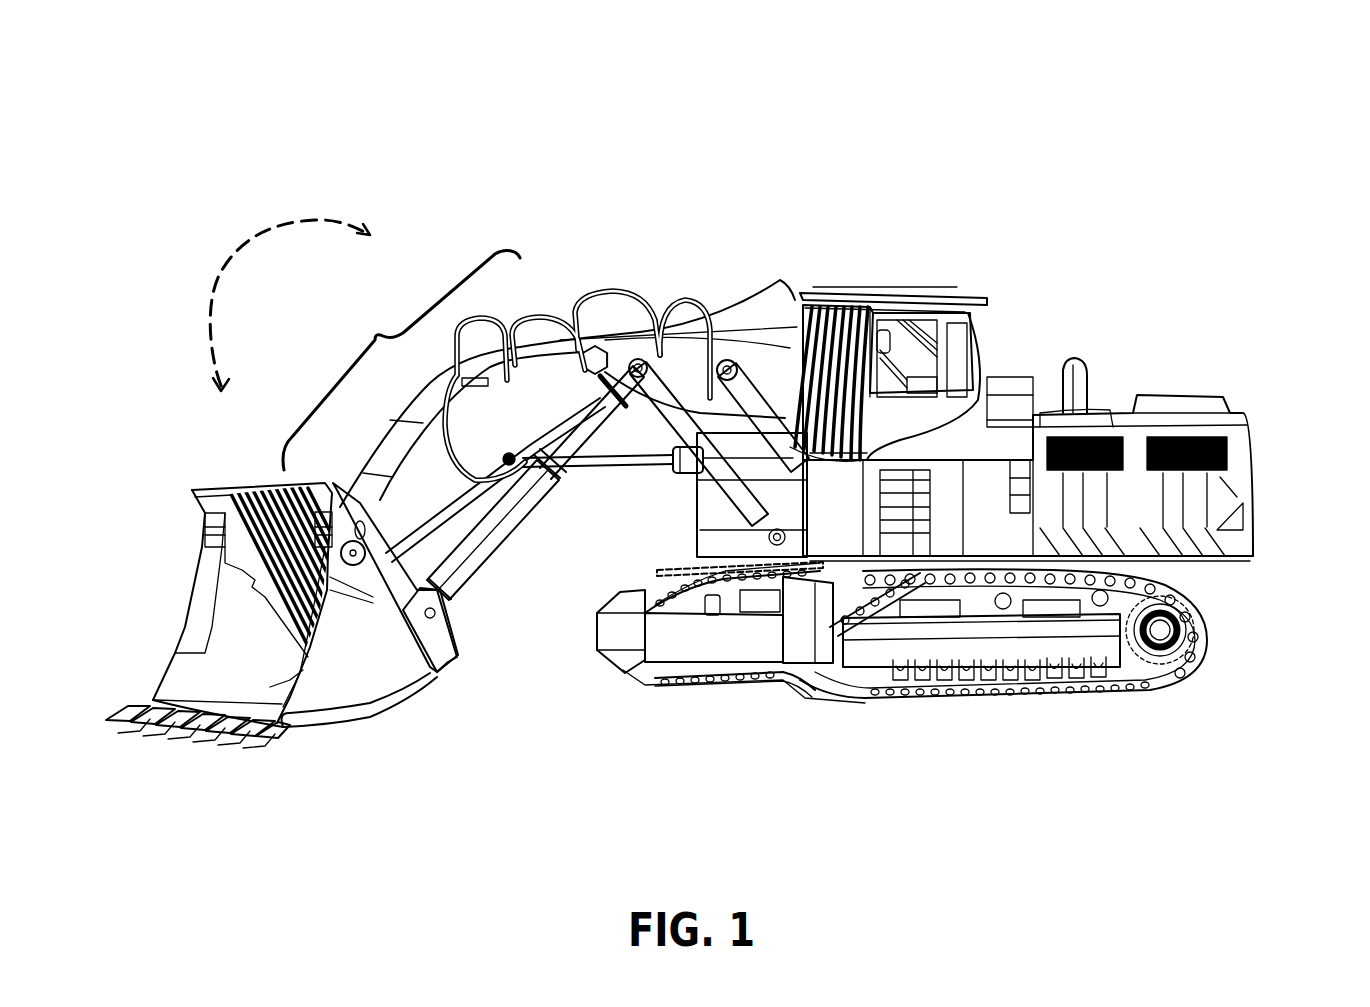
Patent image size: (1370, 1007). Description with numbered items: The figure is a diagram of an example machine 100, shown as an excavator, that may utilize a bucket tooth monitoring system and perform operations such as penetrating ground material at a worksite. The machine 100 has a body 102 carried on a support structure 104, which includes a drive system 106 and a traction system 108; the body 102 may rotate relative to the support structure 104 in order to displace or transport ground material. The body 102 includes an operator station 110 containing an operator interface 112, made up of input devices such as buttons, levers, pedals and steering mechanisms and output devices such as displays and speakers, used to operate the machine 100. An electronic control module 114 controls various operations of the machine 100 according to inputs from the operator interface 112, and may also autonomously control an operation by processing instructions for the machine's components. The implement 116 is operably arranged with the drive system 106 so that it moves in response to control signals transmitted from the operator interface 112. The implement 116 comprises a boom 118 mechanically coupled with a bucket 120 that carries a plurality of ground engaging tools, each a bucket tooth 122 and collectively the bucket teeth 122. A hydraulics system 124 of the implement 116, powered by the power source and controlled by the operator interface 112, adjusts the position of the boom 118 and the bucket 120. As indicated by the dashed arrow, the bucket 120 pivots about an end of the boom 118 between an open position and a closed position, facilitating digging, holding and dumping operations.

The machine 100 is at (178, 50).
The body 102 is at (1242, 383).
The support structure 104 is at (1263, 567).
The drive system 106 is at (1203, 610).
The traction system 108 is at (813, 677).
The operator station 110 is at (985, 333).
The operator interface 112 is at (798, 300).
The electronic control module 114 is at (972, 382).
The implement 116 is at (378, 338).
The boom 118 is at (637, 297).
The bucket 120 is at (175, 667).
The bucket tooth 122 is at (262, 733).
The hydraulics system 124 is at (509, 538).